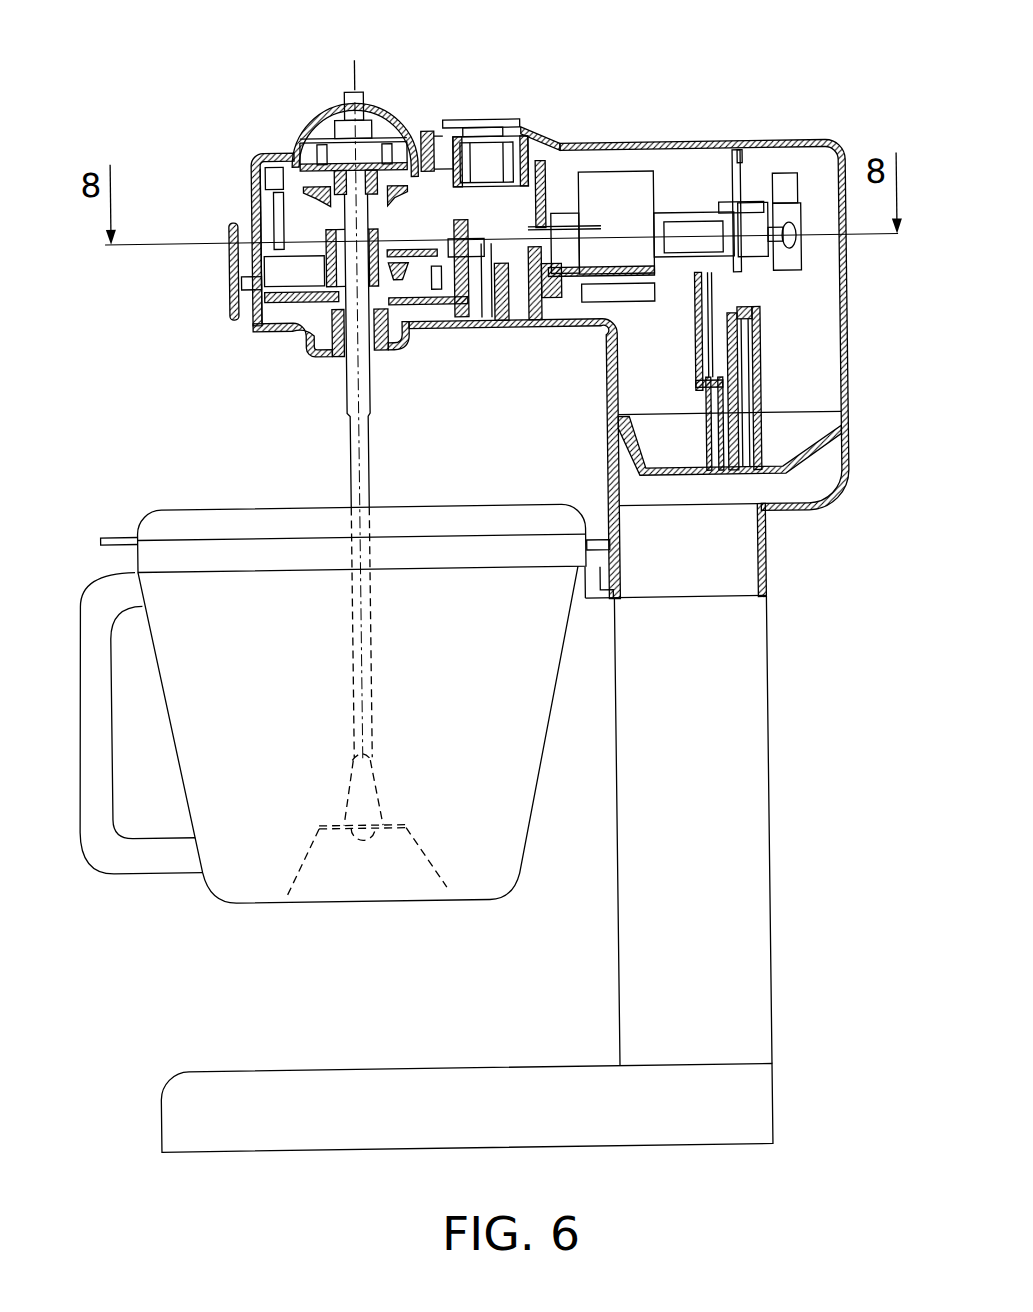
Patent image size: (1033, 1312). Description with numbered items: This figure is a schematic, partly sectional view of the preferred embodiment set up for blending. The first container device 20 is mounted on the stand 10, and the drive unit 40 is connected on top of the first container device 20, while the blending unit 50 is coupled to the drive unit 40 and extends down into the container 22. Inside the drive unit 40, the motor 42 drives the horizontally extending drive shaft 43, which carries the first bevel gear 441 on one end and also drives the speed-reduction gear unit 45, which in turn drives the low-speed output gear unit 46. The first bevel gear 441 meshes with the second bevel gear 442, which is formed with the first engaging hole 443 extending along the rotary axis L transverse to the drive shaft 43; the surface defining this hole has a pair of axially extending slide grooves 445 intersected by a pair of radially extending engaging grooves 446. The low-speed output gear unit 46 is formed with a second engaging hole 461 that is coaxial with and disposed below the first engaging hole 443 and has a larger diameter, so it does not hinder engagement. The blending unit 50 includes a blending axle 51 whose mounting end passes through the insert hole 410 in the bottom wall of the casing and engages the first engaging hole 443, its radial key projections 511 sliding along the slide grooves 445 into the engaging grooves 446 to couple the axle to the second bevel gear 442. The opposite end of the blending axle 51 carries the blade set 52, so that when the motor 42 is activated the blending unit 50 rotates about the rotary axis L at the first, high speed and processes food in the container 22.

The stand 10 is at (778, 832).
The first container device 20 is at (333, 772).
The container 22 is at (265, 857).
The drive unit 40 is at (659, 132).
The motor 42 is at (639, 204).
The drive shaft 43 is at (553, 238).
The first bevel gear 441 is at (439, 182).
The second bevel gear 442 is at (394, 200).
The first engaging hole 443 is at (304, 178).
The slide grooves 445 is at (406, 250).
The engaging grooves 446 is at (264, 277).
The speed-reduction gear unit 45 is at (474, 292).
The low-speed output gear unit 46 is at (452, 300).
The second engaging hole 461 is at (341, 347).
The blending unit 50 is at (316, 432).
The blending axle 51 is at (311, 193).
The radial key projections 511 is at (339, 224).
The blade set 52 is at (420, 848).
The insert hole 410 is at (382, 431).
The rotary axis L is at (356, 72).